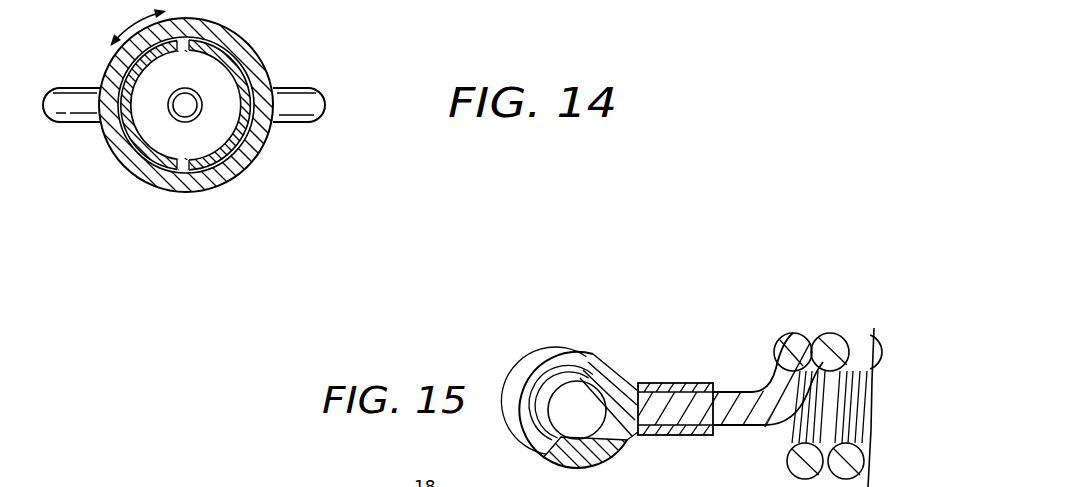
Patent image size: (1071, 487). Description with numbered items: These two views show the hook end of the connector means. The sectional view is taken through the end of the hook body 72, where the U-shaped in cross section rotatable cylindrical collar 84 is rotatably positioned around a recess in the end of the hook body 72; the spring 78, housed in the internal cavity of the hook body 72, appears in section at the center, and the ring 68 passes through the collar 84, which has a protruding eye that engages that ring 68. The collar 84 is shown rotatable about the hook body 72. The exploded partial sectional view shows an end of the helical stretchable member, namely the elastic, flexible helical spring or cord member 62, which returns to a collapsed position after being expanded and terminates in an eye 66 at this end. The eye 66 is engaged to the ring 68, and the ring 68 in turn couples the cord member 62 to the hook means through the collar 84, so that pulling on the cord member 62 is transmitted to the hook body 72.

In FIG. 14, the rotatable cylindrical collar 84 is at (257, 138).
In FIG. 14, the hook body 72 is at (213, 162).
In FIG. 14, the ring 68 is at (309, 115).
In FIG. 14, the spring 78 is at (202, 98).
In FIG. 15, the eye 66 is at (576, 378).
In FIG. 15, the helical spring or cord member 62 is at (828, 355).